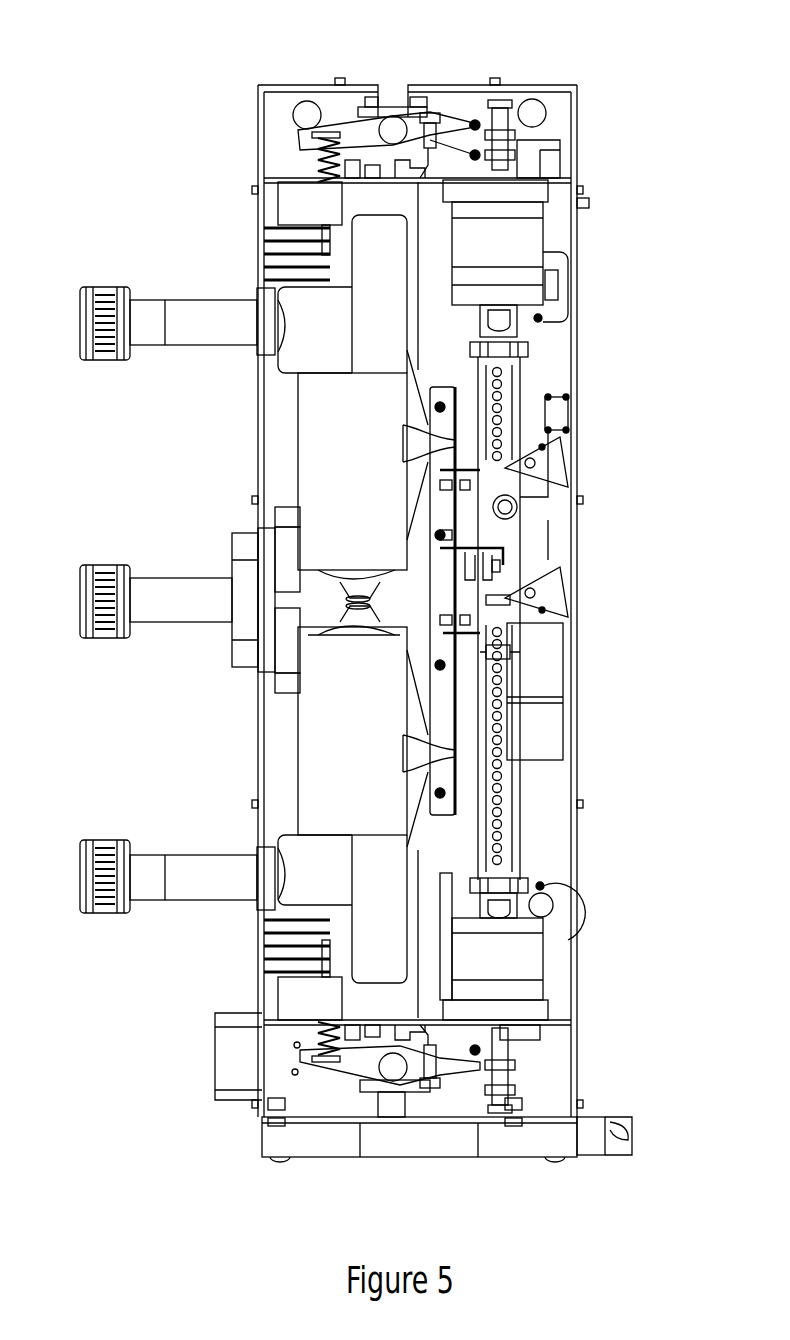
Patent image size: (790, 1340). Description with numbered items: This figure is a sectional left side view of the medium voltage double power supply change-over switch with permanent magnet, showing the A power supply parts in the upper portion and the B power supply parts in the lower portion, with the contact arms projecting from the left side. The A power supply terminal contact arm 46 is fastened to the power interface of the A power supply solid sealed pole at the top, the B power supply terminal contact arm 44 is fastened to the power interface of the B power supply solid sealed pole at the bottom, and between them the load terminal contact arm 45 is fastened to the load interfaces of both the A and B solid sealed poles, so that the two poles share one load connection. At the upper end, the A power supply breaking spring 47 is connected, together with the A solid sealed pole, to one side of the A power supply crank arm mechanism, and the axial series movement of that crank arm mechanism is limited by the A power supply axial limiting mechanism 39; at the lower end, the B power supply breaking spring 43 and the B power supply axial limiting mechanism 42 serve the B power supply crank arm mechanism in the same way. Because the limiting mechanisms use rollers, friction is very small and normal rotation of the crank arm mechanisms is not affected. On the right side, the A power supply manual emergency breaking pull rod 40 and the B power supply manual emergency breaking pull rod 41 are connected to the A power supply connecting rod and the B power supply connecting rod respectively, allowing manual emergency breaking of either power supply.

The A power supply axial limiting mechanism 39 is at (428, 120).
The A power supply manual emergency breaking pull rod 40 is at (487, 598).
The B power supply manual emergency breaking pull rod 41 is at (493, 653).
The B power supply axial limiting mechanism 42 is at (432, 1066).
The B power supply breaking spring 43 is at (310, 1033).
The B power supply terminal contact arm 44 is at (183, 868).
The load terminal contact arm 45 is at (197, 588).
The A power supply terminal contact arm 46 is at (195, 328).
The A power supply breaking spring 47 is at (310, 153).